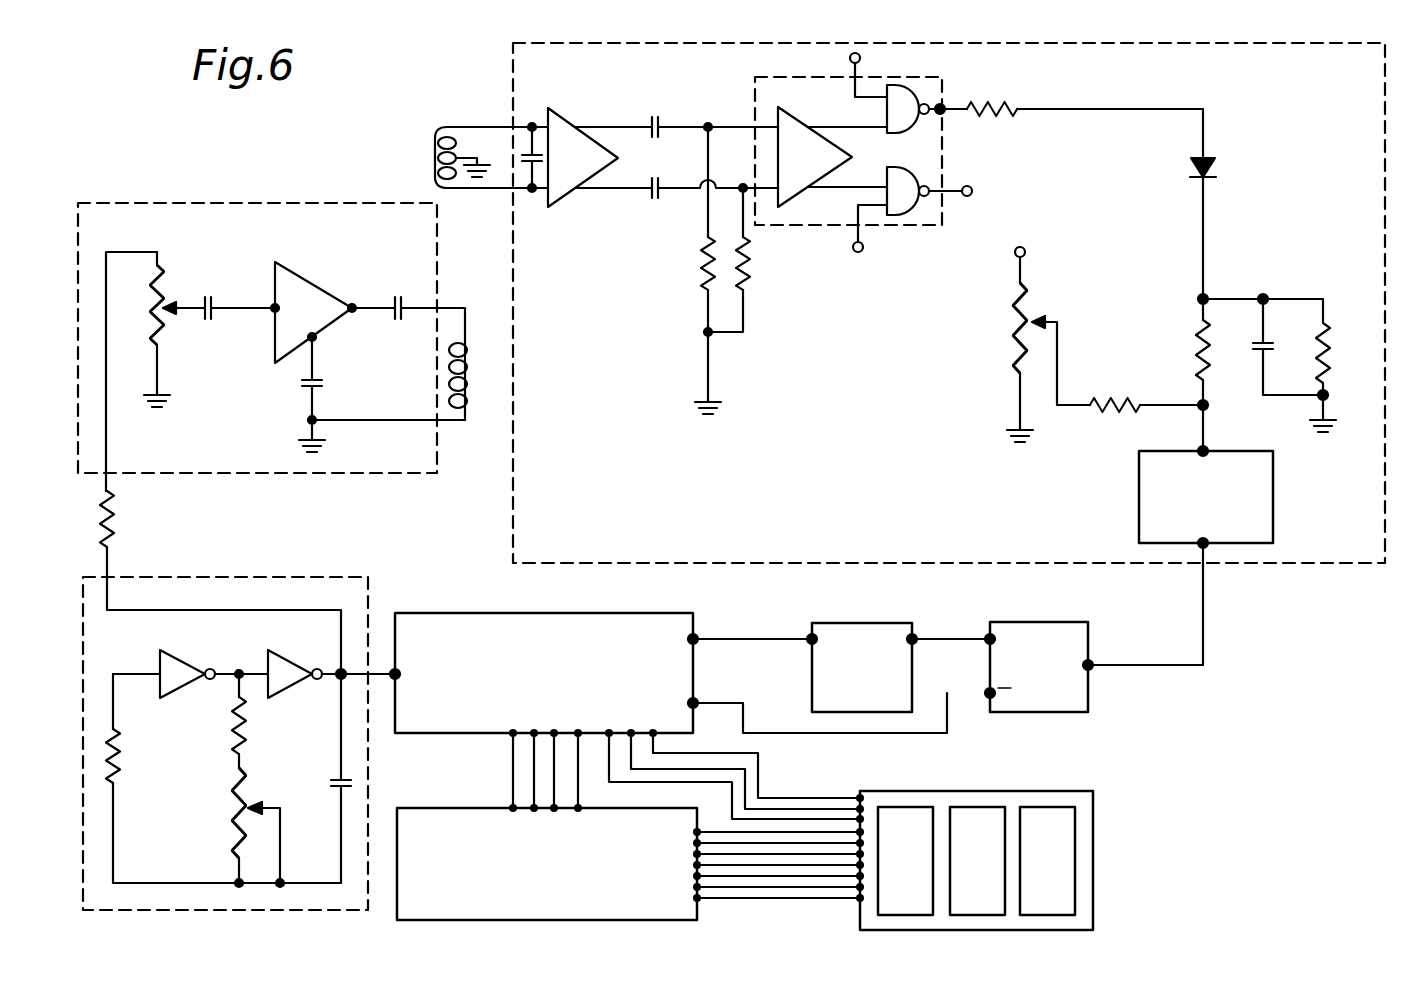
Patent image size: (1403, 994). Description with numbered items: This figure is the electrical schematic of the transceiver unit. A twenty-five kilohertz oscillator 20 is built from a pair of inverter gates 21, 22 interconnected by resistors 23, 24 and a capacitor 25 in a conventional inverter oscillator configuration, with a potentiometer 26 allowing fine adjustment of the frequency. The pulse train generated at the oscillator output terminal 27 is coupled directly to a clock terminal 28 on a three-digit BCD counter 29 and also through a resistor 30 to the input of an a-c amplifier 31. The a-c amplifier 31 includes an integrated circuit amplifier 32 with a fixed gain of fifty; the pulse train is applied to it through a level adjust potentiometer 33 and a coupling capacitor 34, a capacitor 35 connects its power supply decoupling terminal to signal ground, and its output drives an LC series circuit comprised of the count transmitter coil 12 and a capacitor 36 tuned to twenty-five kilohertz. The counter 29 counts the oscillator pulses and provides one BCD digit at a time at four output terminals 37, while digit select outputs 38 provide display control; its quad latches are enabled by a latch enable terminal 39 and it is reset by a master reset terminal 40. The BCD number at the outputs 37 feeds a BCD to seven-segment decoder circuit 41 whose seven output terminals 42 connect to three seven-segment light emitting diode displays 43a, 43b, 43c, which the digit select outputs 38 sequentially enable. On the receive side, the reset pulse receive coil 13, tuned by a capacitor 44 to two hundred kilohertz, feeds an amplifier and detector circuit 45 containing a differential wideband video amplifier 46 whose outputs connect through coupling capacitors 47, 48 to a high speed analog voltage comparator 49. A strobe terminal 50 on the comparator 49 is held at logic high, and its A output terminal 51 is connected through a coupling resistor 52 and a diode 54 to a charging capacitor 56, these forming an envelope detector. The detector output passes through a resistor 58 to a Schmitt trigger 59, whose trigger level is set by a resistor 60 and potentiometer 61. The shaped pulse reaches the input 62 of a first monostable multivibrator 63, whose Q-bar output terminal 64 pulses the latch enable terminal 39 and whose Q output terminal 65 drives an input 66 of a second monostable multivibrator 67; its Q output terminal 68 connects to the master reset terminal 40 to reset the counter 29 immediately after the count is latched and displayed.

The count transmitter coil 12 is at (470, 385).
The reset pulse receive coil 13 is at (440, 148).
The oscillator 20 is at (302, 563).
The inverter gate 21 is at (183, 662).
The inverter gate 22 is at (290, 686).
The resistor 23 is at (121, 760).
The resistor 24 is at (232, 725).
The capacitor 25 is at (333, 794).
The potentiometer 26 is at (232, 818).
The oscillator output terminal 27 is at (336, 665).
The clock terminal 28 is at (393, 668).
The three-digit BCD counter 29 is at (617, 613).
The resistor 30 is at (118, 520).
The a-c amplifier 31 is at (306, 193).
The integrated circuit amplifier 32 is at (318, 278).
The level adjust potentiometer 33 is at (170, 290).
The coupling capacitor 34 is at (209, 297).
The capacitor 35 is at (330, 383).
The capacitor 36 is at (402, 297).
The output terminals 37 is at (585, 728).
The digit select outputs 38 is at (665, 728).
The latch enable terminal 39 is at (698, 697).
The master reset terminal 40 is at (700, 633).
The BCD to 7-segment decoder circuit 41 is at (458, 808).
The output terminals 42 is at (688, 822).
The 7-segment light emitting diode display 43a is at (906, 825).
The 7-segment light emitting diode display 43b is at (978, 820).
The 7-segment light emitting diode display 43c is at (1048, 815).
The capacitor 44 is at (533, 124).
The amplifier and detector circuit 45 is at (1288, 566).
The wideband video amplifier 46 is at (566, 196).
The coupling capacitor 47 is at (660, 116).
The coupling capacitor 48 is at (656, 200).
The high speed analog voltage comparator 49 is at (830, 228).
The strobe terminal 50 is at (862, 58).
The A output terminal 51 is at (944, 105).
The coupling resistor 52 is at (1005, 105).
The diode 54 is at (1216, 168).
The charging capacitor 56 is at (1258, 358).
The resistor 58 is at (1200, 345).
The Schmitt trigger 59 is at (1139, 497).
The resistor 60 is at (1128, 397).
The potentiometer 61 is at (1028, 288).
The input 62 is at (1092, 670).
The first monostable multivibrator 63 is at (1045, 672).
The Q-bar output terminal 64 is at (987, 690).
The Q output terminal 65 is at (986, 632).
The input 66 is at (916, 636).
The second monostable multivibrator 67 is at (880, 676).
The Q output terminal 68 is at (806, 630).